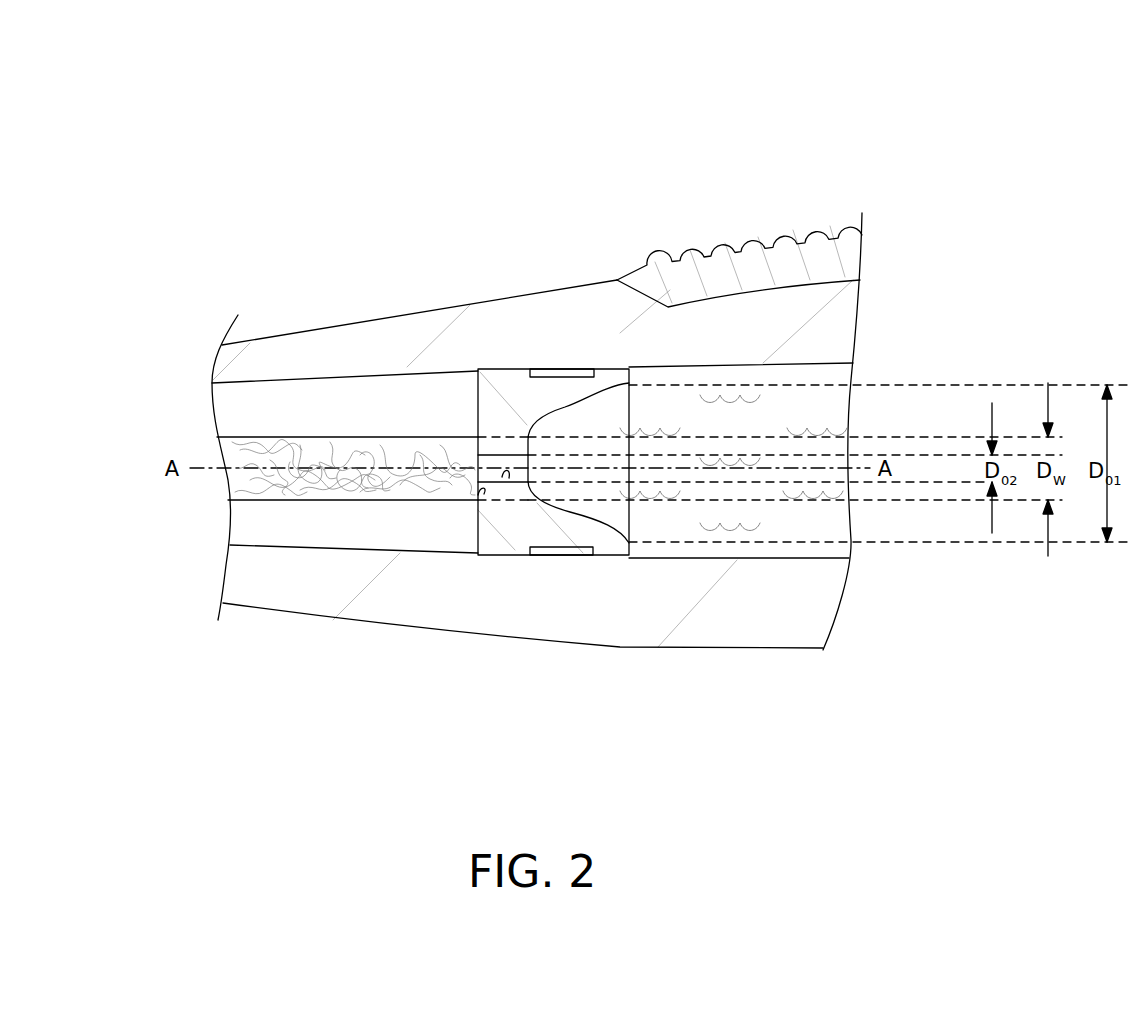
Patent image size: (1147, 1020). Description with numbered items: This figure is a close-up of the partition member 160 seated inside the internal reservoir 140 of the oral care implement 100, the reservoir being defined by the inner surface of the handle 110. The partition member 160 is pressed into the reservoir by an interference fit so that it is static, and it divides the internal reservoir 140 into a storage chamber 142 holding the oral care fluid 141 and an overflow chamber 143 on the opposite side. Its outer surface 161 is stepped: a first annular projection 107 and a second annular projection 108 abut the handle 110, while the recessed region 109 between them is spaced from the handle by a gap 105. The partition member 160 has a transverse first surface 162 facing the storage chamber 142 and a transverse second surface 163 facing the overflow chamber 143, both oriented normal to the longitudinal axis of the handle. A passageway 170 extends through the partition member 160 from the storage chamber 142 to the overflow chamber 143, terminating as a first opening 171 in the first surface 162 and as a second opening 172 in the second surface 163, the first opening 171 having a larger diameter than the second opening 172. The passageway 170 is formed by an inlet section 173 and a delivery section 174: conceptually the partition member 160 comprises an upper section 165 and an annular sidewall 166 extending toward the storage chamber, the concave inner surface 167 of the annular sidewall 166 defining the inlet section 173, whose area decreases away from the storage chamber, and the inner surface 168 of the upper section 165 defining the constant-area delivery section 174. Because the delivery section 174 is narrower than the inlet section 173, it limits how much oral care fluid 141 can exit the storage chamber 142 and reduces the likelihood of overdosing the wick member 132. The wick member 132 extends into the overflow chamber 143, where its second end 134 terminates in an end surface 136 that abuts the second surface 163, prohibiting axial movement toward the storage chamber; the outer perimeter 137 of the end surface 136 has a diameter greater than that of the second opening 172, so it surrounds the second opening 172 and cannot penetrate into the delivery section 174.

The oral care implement 100 is at (266, 136).
The gap 105 is at (576, 350).
The first annular projection 107 is at (608, 375).
The second annular projection 108 is at (520, 470).
The recessed region 109 is at (553, 555).
The handle 110 is at (673, 615).
The wick member 132 is at (243, 478).
The second end 134 is at (441, 517).
The end surface 136 is at (478, 495).
The outer perimeter 137 is at (477, 370).
The internal reservoir 140 is at (838, 526).
The oral care fluid 141 is at (830, 388).
The storage chamber 142 is at (826, 562).
The overflow chamber 143 is at (232, 407).
The partition member 160 is at (497, 381).
The outer surface 161 is at (605, 555).
The first surface 162 is at (636, 369).
The second surface 163 is at (477, 437).
The upper section 165 is at (514, 381).
The annular sidewall 166 is at (553, 393).
The inner surface 167 is at (583, 545).
The inner surface 168 is at (502, 477).
The passageway 170 is at (630, 555).
The first opening 171 is at (630, 413).
The second opening 172 is at (477, 462).
The inlet section 173 is at (585, 420).
The delivery section 174 is at (530, 550).